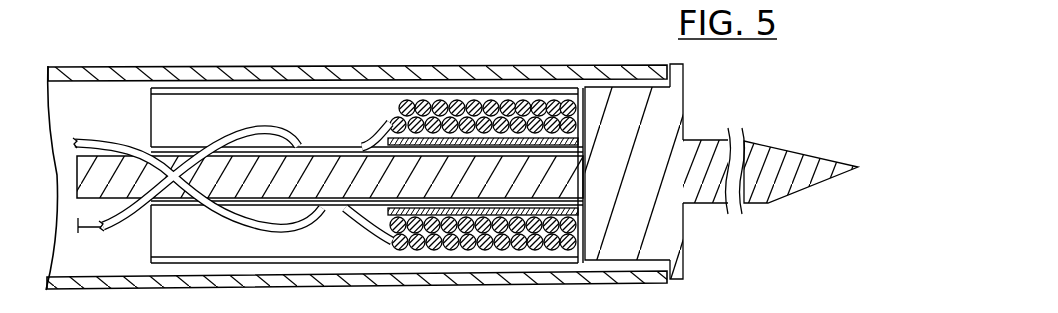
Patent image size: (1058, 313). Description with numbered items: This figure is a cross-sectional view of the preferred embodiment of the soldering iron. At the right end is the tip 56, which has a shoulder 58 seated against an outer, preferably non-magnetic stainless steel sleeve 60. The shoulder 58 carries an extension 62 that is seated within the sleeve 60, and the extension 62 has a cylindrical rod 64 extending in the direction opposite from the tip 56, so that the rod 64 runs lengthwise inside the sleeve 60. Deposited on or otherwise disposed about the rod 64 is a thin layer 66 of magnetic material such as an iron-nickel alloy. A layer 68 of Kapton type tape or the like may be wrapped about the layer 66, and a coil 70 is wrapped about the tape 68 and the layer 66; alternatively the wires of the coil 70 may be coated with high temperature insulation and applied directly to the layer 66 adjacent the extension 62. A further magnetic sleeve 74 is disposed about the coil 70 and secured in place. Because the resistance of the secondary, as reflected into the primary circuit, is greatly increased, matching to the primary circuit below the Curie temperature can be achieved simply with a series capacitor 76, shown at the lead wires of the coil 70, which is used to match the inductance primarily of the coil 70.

The tip 56 is at (753, 182).
The shoulder 58 is at (683, 63).
The sleeve 60 is at (590, 66).
The extension 62 is at (649, 185).
The cylindrical rod 64 is at (470, 185).
The layer of magnetic material 66 is at (340, 147).
The layer of Kapton type 68 is at (583, 146).
The coil 70 is at (532, 105).
The magnetic sleeve 74 is at (432, 92).
The capacitor 76 is at (83, 230).